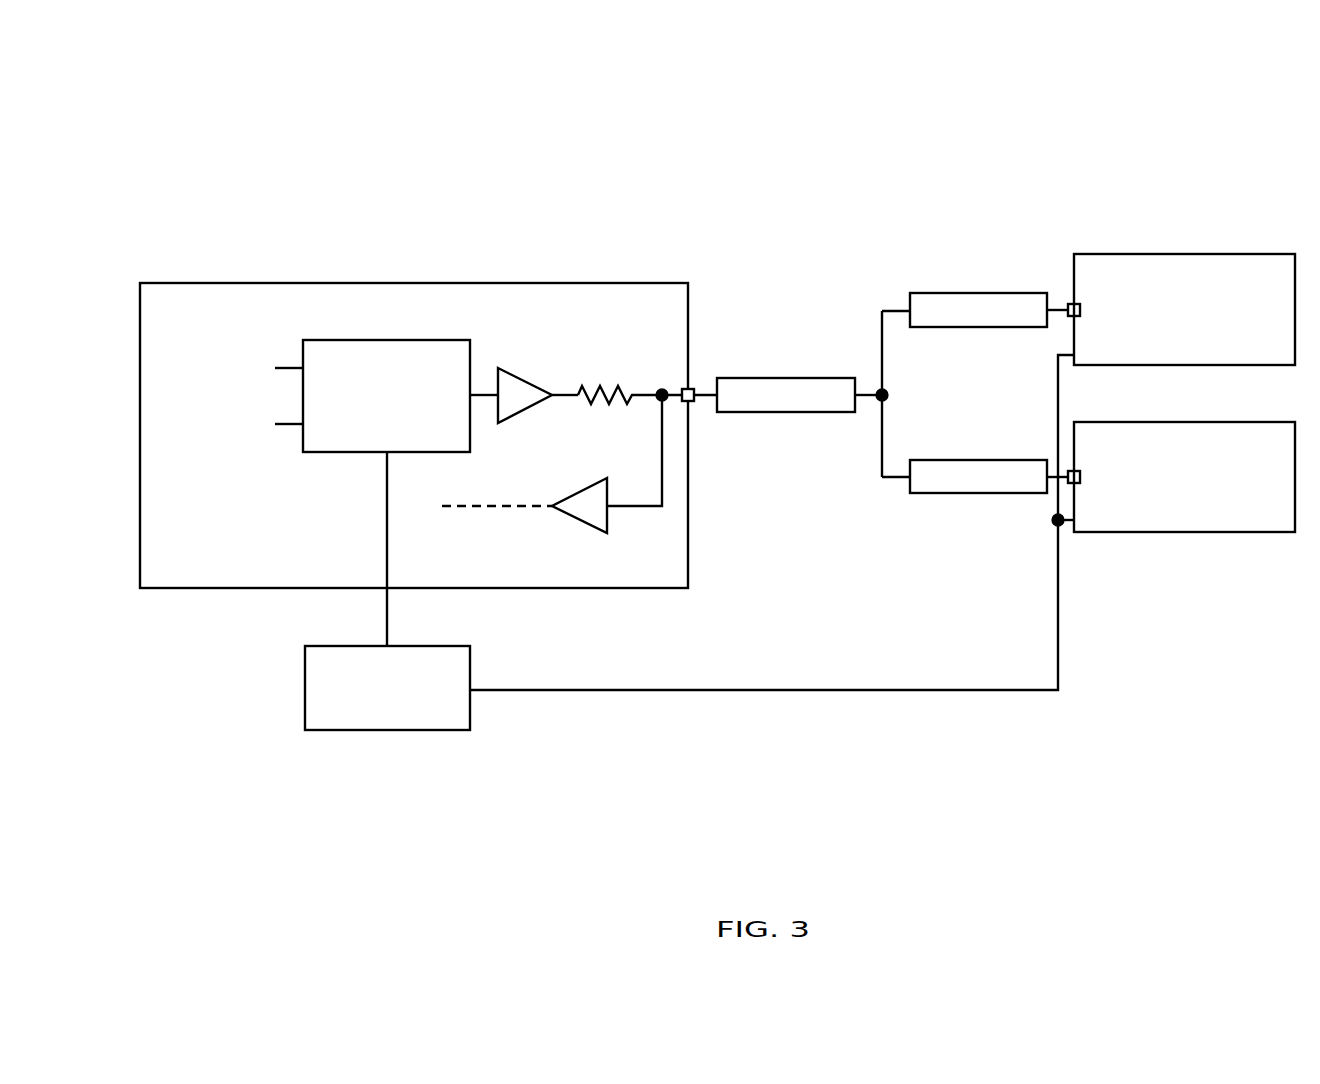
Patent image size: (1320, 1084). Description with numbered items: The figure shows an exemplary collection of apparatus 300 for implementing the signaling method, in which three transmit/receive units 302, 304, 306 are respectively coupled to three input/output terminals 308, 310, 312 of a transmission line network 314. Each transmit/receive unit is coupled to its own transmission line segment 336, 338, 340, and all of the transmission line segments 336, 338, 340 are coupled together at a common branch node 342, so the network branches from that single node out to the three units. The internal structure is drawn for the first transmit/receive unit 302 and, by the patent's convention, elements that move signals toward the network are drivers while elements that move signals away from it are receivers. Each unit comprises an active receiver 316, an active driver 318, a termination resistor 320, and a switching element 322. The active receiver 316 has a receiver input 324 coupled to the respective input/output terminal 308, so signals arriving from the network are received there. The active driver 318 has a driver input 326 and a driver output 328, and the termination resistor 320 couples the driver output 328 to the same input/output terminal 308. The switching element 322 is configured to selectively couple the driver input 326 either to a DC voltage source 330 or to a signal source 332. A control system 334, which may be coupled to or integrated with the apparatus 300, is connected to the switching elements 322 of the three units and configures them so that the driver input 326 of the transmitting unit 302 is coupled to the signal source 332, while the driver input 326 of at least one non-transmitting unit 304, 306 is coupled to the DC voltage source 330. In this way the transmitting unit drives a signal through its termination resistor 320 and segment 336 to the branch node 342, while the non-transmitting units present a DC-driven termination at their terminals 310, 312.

The collection of apparatus 300 is at (805, 170).
The transmit/receive unit 302 is at (525, 588).
The transmit/receive unit 304 is at (1183, 365).
The transmit/receive unit 306 is at (1183, 532).
The input/output terminal 308 is at (694, 392).
The input/output terminal 310 is at (1068, 306).
The input/output terminal 312 is at (1080, 475).
The transmission line network 314 is at (854, 340).
The active receiver 316 is at (582, 525).
The active driver 318 is at (505, 367).
The termination resistor 320 is at (575, 407).
The switching element 322 is at (362, 453).
The receiver input 324 is at (635, 507).
The driver input 326 is at (482, 395).
The driver output 328 is at (562, 395).
The DC voltage source 330 is at (246, 351).
The signal source 332 is at (246, 451).
The control system 334 is at (383, 732).
The transmission line segment 336 is at (800, 413).
The transmission line segment 338 is at (938, 293).
The transmission line segment 340 is at (967, 493).
The common branch node 342 is at (888, 395).